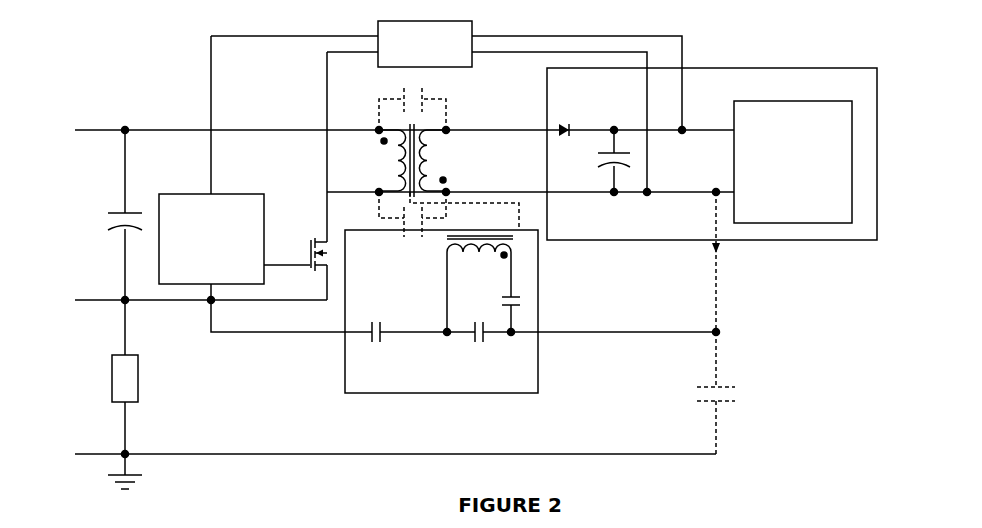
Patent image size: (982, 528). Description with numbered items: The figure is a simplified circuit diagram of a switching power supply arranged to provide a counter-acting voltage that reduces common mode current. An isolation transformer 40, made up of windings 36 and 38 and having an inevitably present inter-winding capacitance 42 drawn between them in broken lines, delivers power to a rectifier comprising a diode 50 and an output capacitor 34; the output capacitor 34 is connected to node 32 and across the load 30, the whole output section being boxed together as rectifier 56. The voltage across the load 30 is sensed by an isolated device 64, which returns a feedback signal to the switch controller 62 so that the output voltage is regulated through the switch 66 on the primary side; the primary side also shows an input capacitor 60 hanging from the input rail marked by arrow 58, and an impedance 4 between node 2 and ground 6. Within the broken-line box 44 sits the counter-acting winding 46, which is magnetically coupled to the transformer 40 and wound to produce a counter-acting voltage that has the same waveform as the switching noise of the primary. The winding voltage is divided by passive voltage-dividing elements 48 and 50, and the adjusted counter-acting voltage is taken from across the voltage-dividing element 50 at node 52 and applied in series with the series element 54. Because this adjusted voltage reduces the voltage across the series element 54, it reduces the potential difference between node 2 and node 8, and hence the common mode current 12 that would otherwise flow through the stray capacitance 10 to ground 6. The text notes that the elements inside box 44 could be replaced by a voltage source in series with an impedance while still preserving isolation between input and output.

The node 2 is at (115, 305).
The impedance 4 is at (138, 361).
The ground 6 is at (129, 446).
The node 8 is at (723, 326).
The parasitic capacitance 10 is at (740, 397).
The common mode current 12 is at (723, 249).
The load 30 is at (793, 162).
The node 32 is at (616, 126).
The output capacitor 34 is at (608, 151).
The winding 36 is at (392, 153).
The winding 38 is at (435, 152).
The transformer 40 is at (400, 120).
The inter-winding capacitance 42 is at (410, 82).
The box 44 is at (540, 311).
The counter-acting winding 46 is at (463, 258).
The voltage-dividing element 48 is at (507, 303).
The voltage-dividing element 50 is at (558, 122).
The node 52 is at (443, 326).
The series element 54 is at (372, 345).
The output rectifier circuit 56 is at (593, 238).
The input voltage 58 is at (133, 137).
The input capacitor 60 is at (112, 211).
The switch controller 62 is at (211, 160).
The isolated device 64 is at (382, 44).
The switch 66 is at (307, 233).